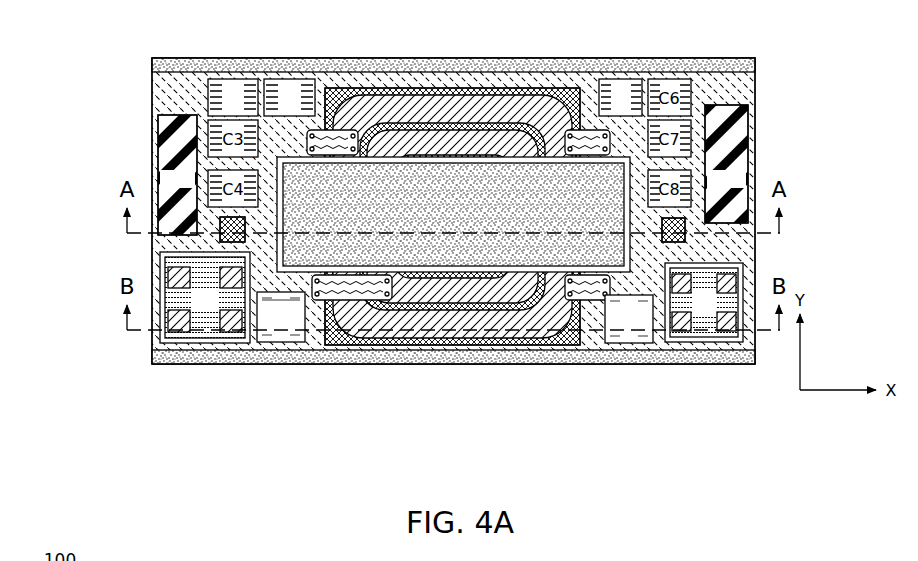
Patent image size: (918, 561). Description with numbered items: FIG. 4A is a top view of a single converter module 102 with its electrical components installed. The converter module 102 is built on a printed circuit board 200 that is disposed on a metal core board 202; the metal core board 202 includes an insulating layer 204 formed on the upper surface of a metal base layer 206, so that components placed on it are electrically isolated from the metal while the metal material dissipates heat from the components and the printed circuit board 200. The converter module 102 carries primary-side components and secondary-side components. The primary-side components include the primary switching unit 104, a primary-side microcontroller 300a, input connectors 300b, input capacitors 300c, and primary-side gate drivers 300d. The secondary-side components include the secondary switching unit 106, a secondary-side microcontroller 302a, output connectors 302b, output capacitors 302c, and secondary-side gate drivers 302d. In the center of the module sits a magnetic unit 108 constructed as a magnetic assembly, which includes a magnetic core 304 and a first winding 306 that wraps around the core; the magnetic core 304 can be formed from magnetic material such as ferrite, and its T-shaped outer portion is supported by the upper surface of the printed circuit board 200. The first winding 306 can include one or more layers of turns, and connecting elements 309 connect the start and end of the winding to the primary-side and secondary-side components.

The converter module 102 is at (104, 152).
The primary switching unit 104 is at (185, 344).
The secondary switching unit 106 is at (703, 343).
The magnetic unit 108 is at (504, 144).
The printed circuit board 200 is at (511, 364).
The metal core board 202 is at (757, 250).
The insulating layer 204 is at (166, 100).
The metal base layer 206 is at (216, 72).
The primary-side microcontroller 300a is at (222, 236).
The input connectors 300b is at (158, 128).
The input capacitors 300c is at (290, 79).
The primary-side gate drivers 300d is at (275, 343).
The secondary-side microcontroller 302a is at (688, 243).
The output connectors 302b is at (750, 122).
The output capacitors 302c is at (621, 79).
The secondary-side gate drivers 302d is at (620, 344).
The magnetic core 304 is at (487, 252).
The first winding 306 is at (460, 273).
The connecting elements 309 is at (333, 130).